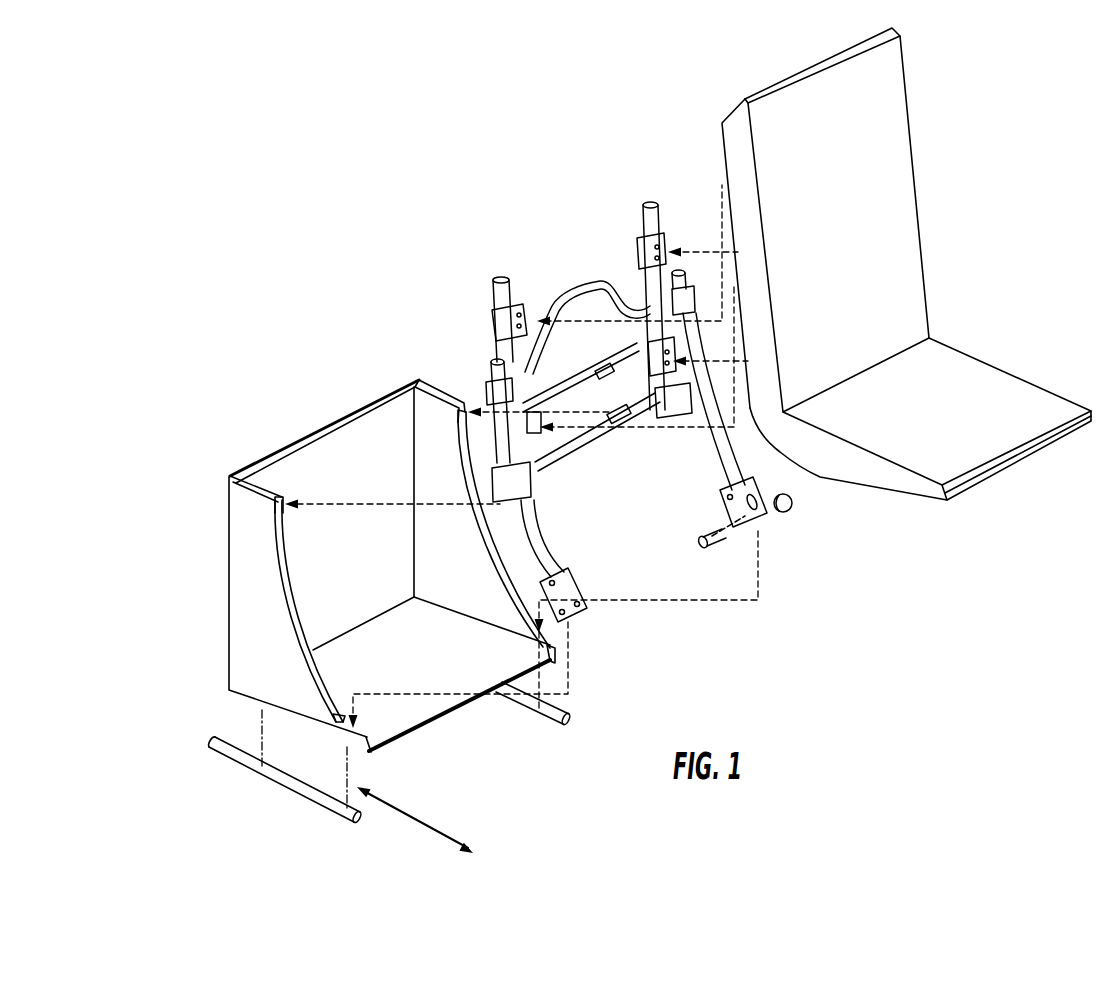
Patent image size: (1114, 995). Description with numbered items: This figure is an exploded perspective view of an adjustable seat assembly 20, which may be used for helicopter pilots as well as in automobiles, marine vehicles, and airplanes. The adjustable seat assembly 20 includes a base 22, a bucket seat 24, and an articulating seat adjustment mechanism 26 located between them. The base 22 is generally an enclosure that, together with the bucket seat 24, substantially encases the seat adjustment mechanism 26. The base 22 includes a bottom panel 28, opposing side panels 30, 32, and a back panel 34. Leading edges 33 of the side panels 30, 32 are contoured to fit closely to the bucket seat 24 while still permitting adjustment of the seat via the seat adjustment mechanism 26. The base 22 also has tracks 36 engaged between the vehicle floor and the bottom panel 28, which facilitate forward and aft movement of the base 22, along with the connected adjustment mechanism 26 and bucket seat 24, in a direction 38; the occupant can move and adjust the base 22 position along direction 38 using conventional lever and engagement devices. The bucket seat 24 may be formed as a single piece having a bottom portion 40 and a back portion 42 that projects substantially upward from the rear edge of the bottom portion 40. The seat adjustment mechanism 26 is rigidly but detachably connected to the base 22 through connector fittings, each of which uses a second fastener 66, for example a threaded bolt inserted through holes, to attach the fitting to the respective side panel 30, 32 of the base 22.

The adjustable seat assembly 20 is at (613, 453).
The base 22 is at (356, 629).
The bucket seat 24 is at (917, 264).
The articulating seat adjustment mechanism 26 is at (563, 436).
The bottom panel 28 is at (462, 720).
The side panel 30 is at (289, 646).
The side panel 32 is at (482, 626).
The leading edges 33 is at (437, 566).
The back panel 34 is at (347, 515).
The tracks 36 is at (390, 780).
The direction 38 is at (415, 830).
The bottom portion 40 is at (931, 409).
The back portion 42 is at (866, 220).
The second fastener 66 is at (769, 523).